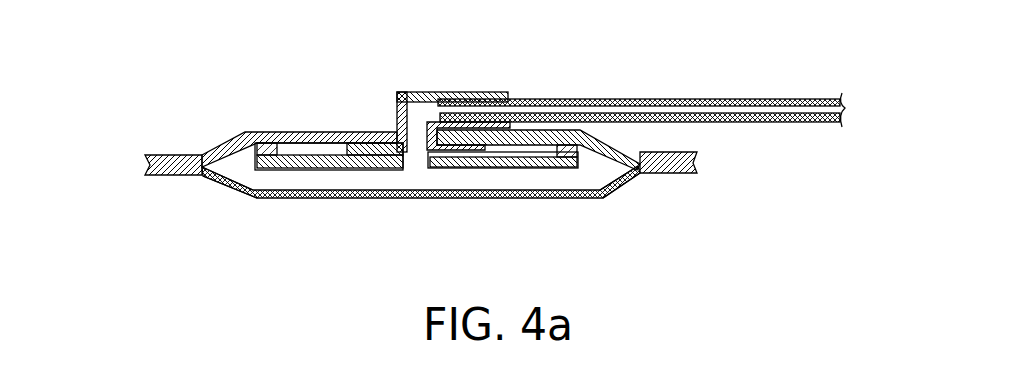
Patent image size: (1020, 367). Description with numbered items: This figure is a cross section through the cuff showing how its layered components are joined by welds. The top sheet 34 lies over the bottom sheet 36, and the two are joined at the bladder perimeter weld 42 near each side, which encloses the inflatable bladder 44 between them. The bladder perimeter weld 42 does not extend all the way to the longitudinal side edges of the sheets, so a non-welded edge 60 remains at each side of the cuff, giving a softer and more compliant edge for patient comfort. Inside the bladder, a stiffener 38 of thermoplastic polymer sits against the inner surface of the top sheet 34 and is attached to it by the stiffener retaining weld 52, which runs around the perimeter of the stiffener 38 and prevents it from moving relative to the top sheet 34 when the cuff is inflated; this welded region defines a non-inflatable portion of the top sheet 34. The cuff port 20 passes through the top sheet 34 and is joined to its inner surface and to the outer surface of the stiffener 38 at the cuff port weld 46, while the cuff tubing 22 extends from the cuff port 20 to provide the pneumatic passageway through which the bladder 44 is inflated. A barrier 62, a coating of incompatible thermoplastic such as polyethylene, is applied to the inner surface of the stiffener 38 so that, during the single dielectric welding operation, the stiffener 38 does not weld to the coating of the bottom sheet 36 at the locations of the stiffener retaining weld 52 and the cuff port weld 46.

The cuff port 20 is at (408, 100).
The cuff tubing 22 is at (602, 100).
The top sheet 34 is at (230, 132).
The bottom sheet 36 is at (277, 192).
The stiffener 38 is at (595, 170).
The bladder perimeter weld 42 is at (183, 176).
The inflatable bladder 44 is at (383, 183).
The cuff port weld 46 is at (357, 131).
The stiffener retaining weld 52 is at (267, 131).
The non-welded edge 60 is at (148, 154).
The barrier 62 is at (520, 170).